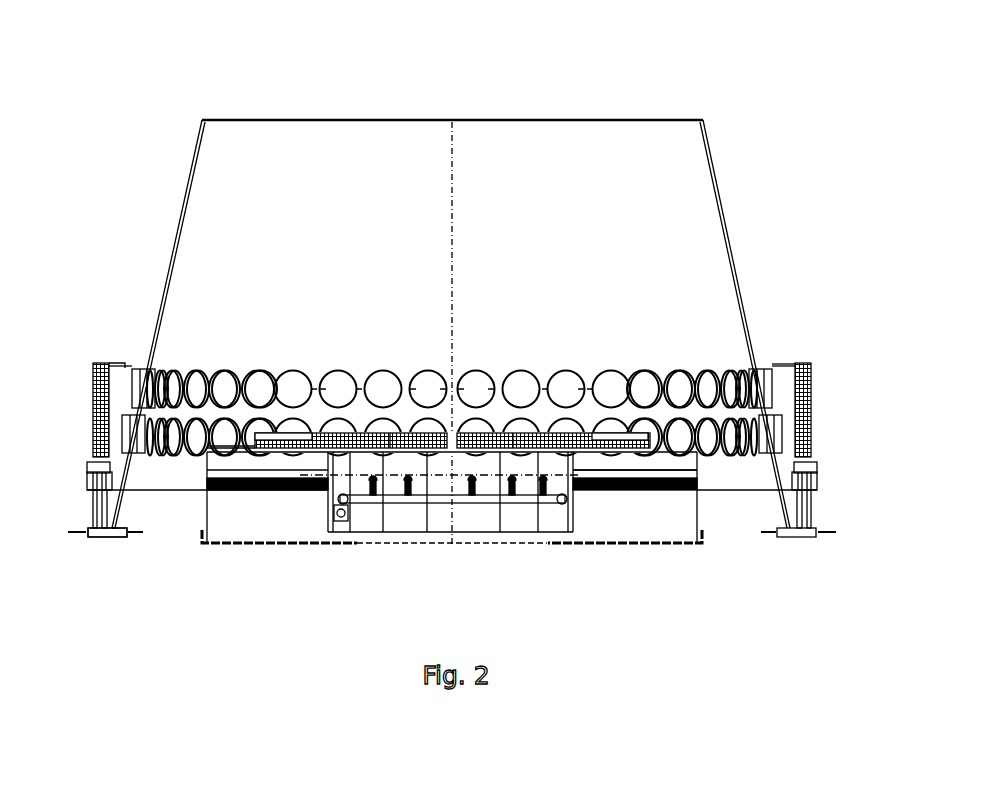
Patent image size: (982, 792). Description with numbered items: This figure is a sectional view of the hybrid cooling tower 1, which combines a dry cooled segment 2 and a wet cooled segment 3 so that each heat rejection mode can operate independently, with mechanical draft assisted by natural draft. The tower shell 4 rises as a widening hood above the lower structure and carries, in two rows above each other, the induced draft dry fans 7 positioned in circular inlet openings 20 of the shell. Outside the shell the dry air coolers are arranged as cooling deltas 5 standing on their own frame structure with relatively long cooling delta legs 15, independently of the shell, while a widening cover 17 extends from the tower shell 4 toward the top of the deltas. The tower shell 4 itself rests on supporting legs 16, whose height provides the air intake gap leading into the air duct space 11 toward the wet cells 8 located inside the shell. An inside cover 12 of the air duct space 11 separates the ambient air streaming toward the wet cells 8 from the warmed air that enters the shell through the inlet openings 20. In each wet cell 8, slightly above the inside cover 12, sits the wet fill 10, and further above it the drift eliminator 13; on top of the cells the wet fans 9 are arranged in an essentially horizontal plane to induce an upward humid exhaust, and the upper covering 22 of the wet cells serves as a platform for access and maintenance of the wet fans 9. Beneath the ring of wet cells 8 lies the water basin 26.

The hybrid cooling tower 1 is at (232, 103).
The dry cooled segment 2 is at (98, 354).
The wet cooled segment 3 is at (452, 543).
The tower shell 4 is at (731, 214).
The cooling delta 5 is at (801, 360).
The dry fan 7 is at (763, 362).
The wet cell 8 is at (666, 507).
The wet fan 9 is at (624, 432).
The wet fill 10 is at (630, 490).
The air duct space 11 is at (188, 523).
The inside cover 12 is at (132, 488).
The drift eliminator 13 is at (635, 542).
The cooling delta leg 15 is at (88, 528).
The supporting leg 16 is at (118, 528).
The widening cover 17 is at (122, 362).
The inlet opening 20 is at (378, 383).
The upper covering 22 is at (222, 447).
The water basin 26 is at (283, 532).